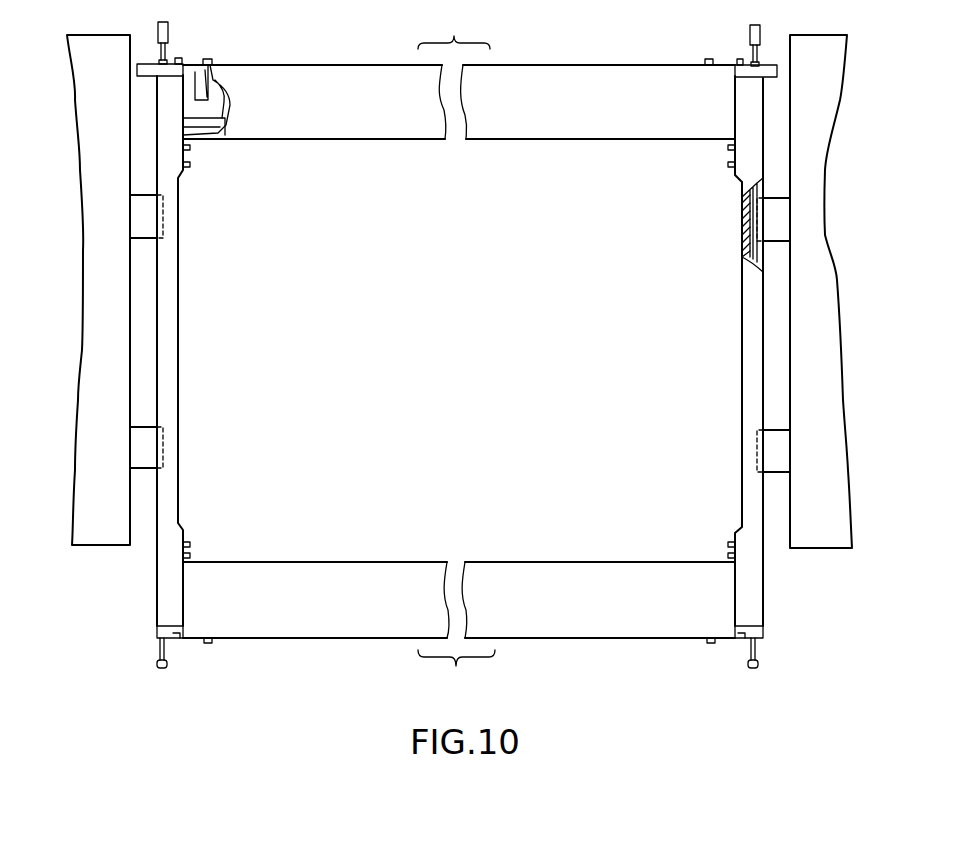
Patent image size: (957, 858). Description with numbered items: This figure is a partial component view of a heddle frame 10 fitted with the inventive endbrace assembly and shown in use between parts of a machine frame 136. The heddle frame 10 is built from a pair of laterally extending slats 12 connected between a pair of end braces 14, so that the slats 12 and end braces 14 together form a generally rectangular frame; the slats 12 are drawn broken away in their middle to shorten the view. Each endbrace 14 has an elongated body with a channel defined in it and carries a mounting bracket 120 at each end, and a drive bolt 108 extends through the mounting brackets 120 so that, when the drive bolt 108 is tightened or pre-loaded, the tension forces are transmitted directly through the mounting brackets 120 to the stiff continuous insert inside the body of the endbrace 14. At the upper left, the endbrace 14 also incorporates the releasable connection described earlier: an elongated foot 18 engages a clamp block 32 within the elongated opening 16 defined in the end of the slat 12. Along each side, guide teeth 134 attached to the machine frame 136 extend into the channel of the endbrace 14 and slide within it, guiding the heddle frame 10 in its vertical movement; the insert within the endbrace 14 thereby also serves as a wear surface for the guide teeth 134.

The heddle frame 10 is at (79, 290).
The slat 12 is at (532, 78).
The endbrace 14 is at (170, 352).
The elongated opening 16 is at (220, 82).
The elongated foot 18 is at (188, 90).
The clamp block 32 is at (193, 115).
The drive bolt 108 is at (749, 27).
The mounting bracket 120 is at (748, 72).
The guide teeth 134 is at (145, 223).
The machine frame 136 is at (815, 356).